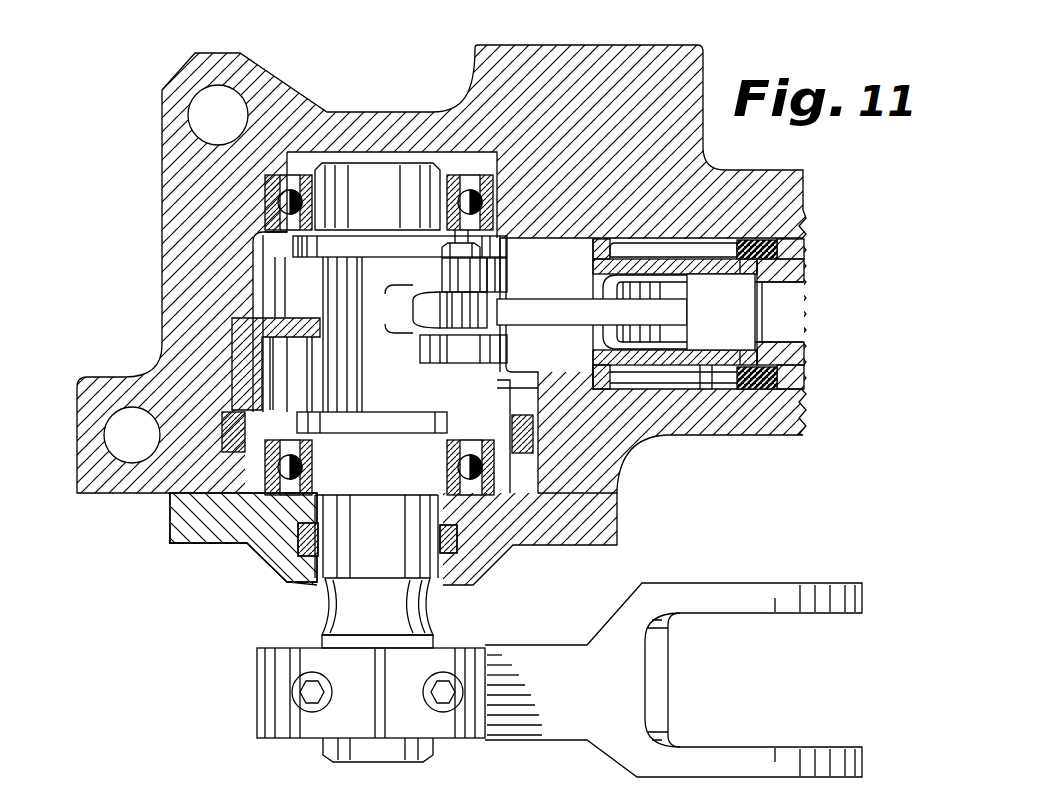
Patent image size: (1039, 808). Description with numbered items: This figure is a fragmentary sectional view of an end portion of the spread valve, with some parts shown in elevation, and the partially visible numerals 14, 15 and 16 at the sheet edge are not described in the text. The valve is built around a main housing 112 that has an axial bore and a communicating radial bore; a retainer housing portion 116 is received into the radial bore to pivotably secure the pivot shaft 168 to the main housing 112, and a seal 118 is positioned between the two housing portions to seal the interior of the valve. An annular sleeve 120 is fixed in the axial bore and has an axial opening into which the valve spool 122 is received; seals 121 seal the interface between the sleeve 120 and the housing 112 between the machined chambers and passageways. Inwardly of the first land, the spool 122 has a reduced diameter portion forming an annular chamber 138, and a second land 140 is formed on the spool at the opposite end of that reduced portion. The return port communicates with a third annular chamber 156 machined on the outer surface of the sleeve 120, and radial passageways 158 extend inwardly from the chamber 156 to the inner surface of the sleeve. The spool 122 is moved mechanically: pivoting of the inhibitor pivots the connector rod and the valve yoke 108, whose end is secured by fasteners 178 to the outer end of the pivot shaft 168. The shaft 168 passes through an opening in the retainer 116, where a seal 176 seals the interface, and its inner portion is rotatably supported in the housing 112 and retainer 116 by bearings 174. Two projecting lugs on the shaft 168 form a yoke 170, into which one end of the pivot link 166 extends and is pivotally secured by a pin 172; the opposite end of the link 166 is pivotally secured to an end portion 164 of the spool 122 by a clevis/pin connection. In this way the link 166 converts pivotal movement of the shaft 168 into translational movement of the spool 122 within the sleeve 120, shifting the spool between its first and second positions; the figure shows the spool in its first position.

The yoke 108 is at (742, 592).
The main housing 112 is at (170, 182).
The retainer housing portion 116 is at (168, 528).
The seal 118 is at (233, 387).
The annular sleeve 120 is at (800, 250).
The seals 121 is at (768, 362).
The valve spool 122 is at (790, 322).
The annular chamber 138 is at (790, 350).
The second land 140 is at (745, 326).
The third annular chamber 156 is at (657, 388).
The radial passageways 158 is at (708, 366).
The end portion of the spool 164 is at (604, 292).
The pivot link 166 is at (574, 326).
The pivot shaft 168 is at (322, 602).
The yoke 170 is at (574, 238).
The pin 172 is at (500, 240).
The bearings 174 is at (283, 152).
The seal 176 is at (276, 574).
The fasteners 178 is at (302, 692).
The reference numeral (partially visible) 14 is at (329, 805).
The reference numeral (partially visible) 15 is at (472, 805).
The reference numeral (partially visible) 16 is at (582, 805).